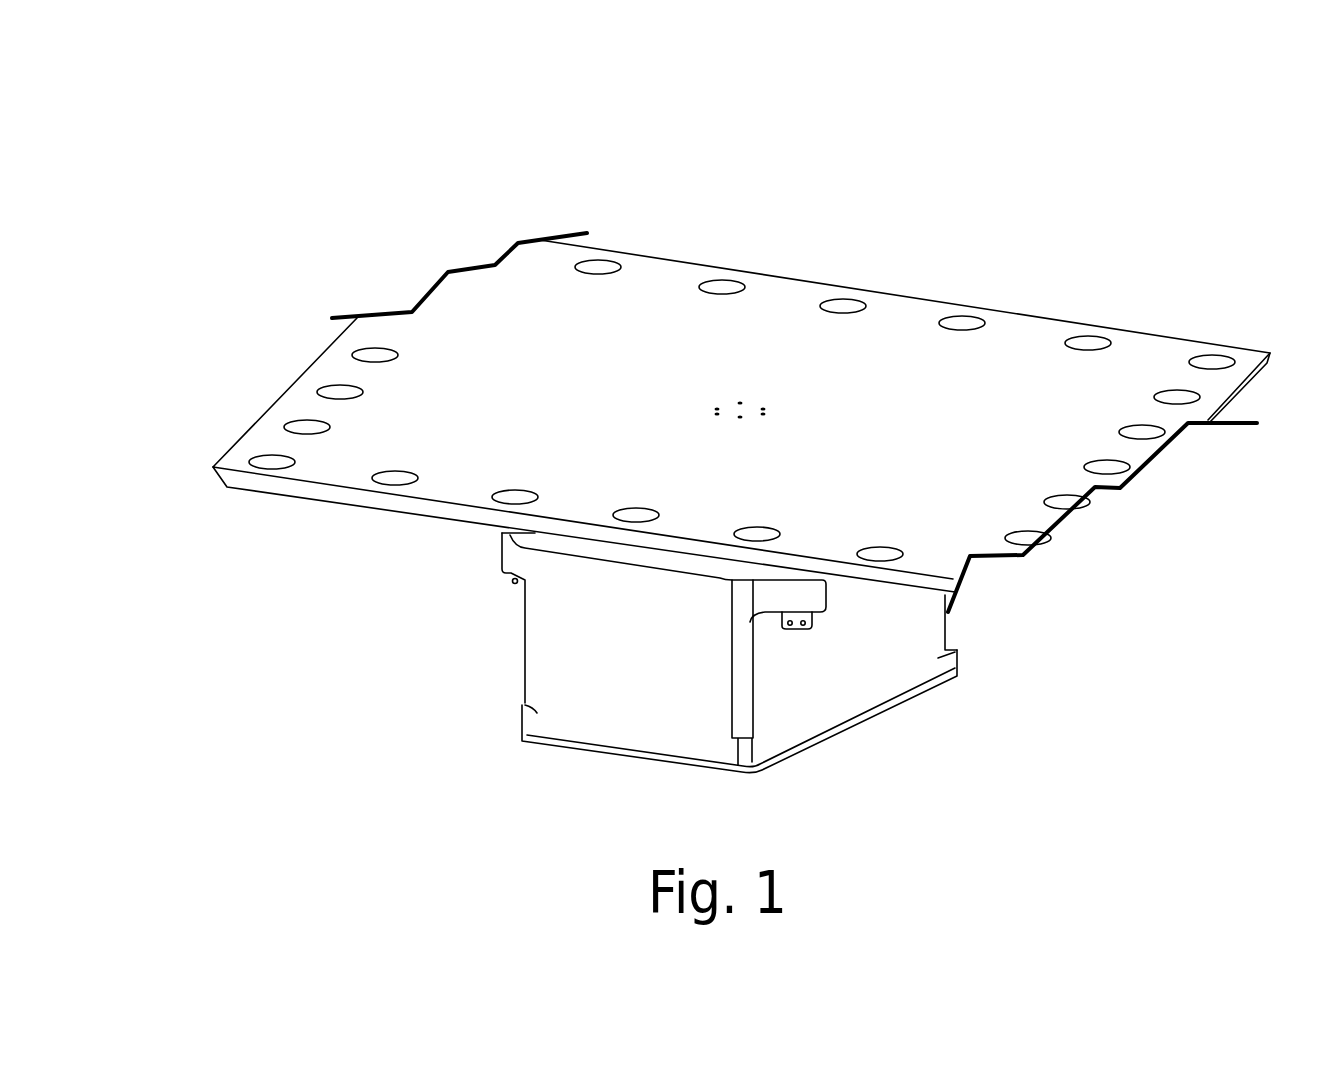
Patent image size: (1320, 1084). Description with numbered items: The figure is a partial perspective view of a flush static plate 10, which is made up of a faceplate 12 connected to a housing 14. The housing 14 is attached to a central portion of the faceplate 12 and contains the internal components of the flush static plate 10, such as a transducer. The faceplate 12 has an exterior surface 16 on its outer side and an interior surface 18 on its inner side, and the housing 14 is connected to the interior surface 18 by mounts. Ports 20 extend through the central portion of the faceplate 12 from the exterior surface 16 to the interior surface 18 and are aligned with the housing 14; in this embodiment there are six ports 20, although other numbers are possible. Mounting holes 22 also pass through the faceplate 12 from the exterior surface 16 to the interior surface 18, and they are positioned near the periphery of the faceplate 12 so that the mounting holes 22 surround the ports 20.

The flush static plate 10 is at (330, 155).
The faceplate 12 is at (338, 367).
The housing 14 is at (550, 647).
The exterior surface 16 is at (1066, 397).
The interior surface 18 is at (887, 587).
The ports 20 is at (715, 405).
The mounting holes 22 is at (295, 428).